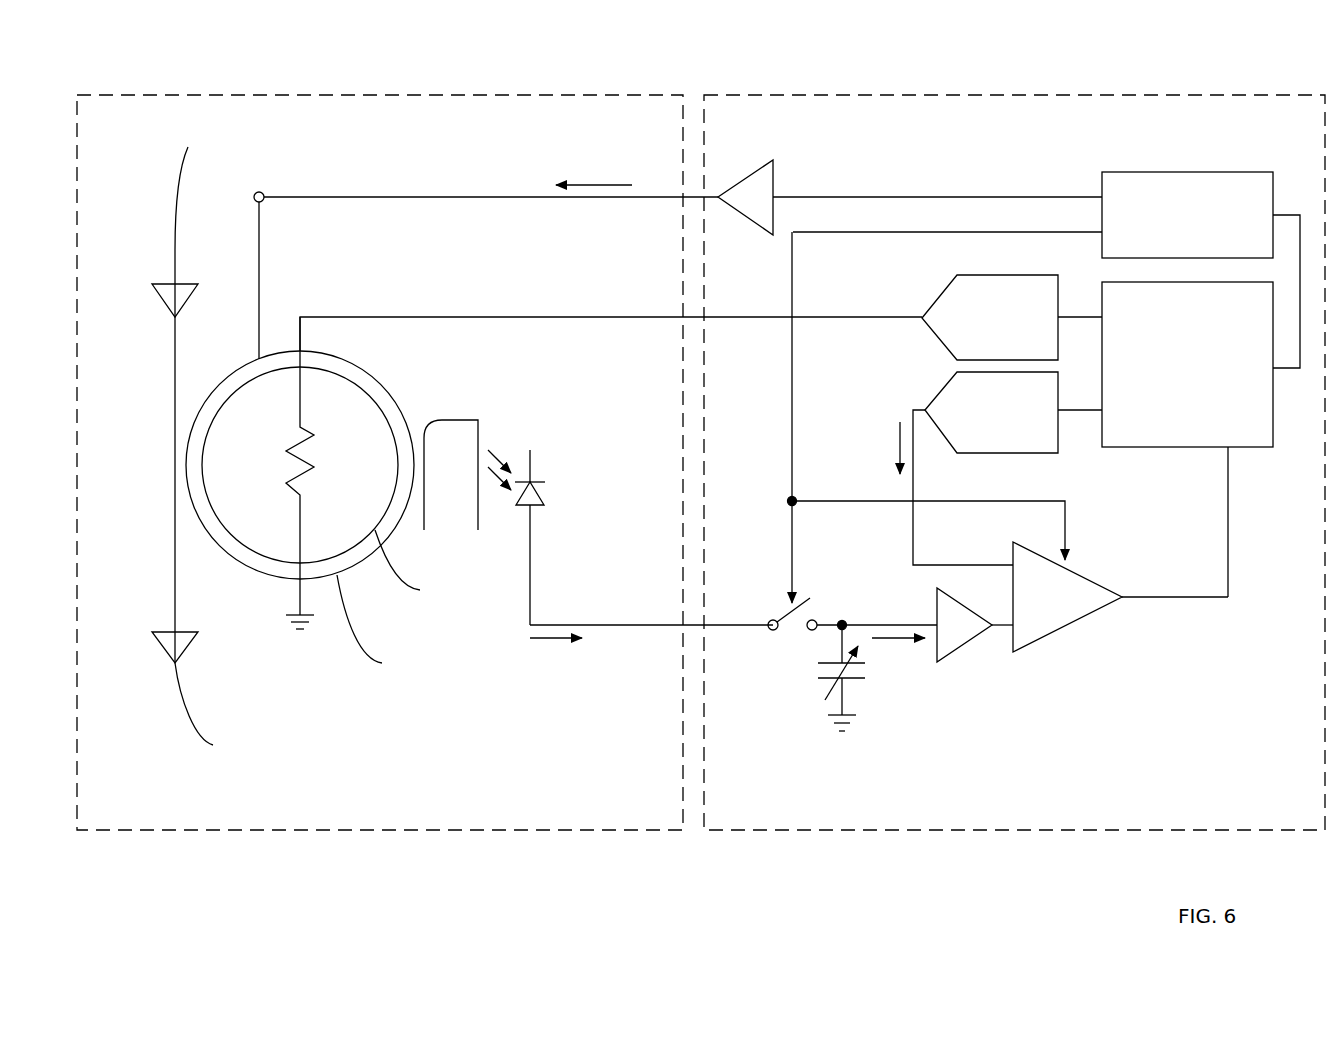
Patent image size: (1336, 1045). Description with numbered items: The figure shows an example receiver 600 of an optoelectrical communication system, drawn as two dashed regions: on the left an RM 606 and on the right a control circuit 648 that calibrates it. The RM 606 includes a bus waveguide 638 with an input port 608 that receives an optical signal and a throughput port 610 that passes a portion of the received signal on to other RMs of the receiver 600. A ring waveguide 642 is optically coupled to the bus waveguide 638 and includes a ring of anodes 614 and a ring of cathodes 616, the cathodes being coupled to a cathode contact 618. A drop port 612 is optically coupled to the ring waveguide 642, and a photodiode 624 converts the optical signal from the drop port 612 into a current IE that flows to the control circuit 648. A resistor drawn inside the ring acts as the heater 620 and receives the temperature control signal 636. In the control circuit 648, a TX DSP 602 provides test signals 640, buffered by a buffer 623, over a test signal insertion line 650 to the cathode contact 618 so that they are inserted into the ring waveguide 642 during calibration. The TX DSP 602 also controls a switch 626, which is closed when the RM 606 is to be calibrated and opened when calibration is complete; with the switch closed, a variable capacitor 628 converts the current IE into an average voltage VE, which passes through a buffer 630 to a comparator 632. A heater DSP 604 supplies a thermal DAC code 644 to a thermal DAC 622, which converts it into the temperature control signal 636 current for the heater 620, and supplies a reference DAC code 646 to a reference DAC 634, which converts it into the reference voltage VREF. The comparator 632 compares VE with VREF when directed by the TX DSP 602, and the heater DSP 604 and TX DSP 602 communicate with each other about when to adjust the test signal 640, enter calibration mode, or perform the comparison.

The receiver 600 is at (1137, 60).
The TX DSP 602 is at (1046, 270).
The heater DSP 604 is at (1187, 439).
The RM 606 is at (333, 830).
The input port 608 is at (225, 181).
The throughput port 610 is at (249, 725).
The drop port 612 is at (433, 417).
The ring of anodes 614 is at (434, 576).
The ring of cathodes 616 is at (407, 637).
The cathode contact 618 is at (263, 203).
The heater 620 is at (285, 455).
The thermal DAC 622 is at (1012, 317).
The buffer 623 is at (745, 175).
The photodiode 624 is at (560, 495).
The switch 626 is at (813, 588).
The variable capacitor 628 is at (880, 680).
The buffer 630 is at (955, 655).
The comparator 632 is at (1008, 575).
The reference DAC 634 is at (975, 468).
The temperature control signal 636 is at (490, 317).
The bus waveguide 638 is at (175, 418).
The test signal 640 is at (594, 155).
The ring waveguide 642 is at (343, 378).
The thermal DAC code 644 is at (1087, 317).
The reference DAC code 646 is at (1072, 410).
The control circuit 648 is at (802, 830).
The test signal insertion line 650 is at (847, 197).